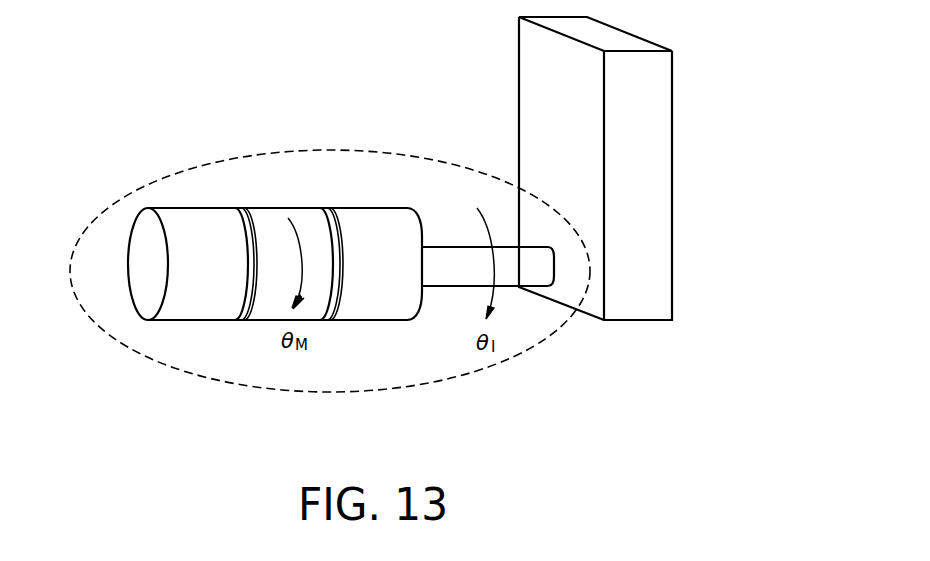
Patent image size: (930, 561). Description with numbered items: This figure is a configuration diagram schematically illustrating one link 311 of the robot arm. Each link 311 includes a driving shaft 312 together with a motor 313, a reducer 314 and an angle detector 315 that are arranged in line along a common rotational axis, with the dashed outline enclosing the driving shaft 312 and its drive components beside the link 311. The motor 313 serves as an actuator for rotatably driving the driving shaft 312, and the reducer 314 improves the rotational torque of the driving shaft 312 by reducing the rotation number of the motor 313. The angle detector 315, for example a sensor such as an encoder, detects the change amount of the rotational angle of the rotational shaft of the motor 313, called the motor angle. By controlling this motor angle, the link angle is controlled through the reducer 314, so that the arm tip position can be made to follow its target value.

The link 311 is at (533, 67).
The driving shaft 312 is at (122, 197).
The motor 313 is at (277, 217).
The reducer 314 is at (377, 218).
The angle detector 315 is at (198, 217).